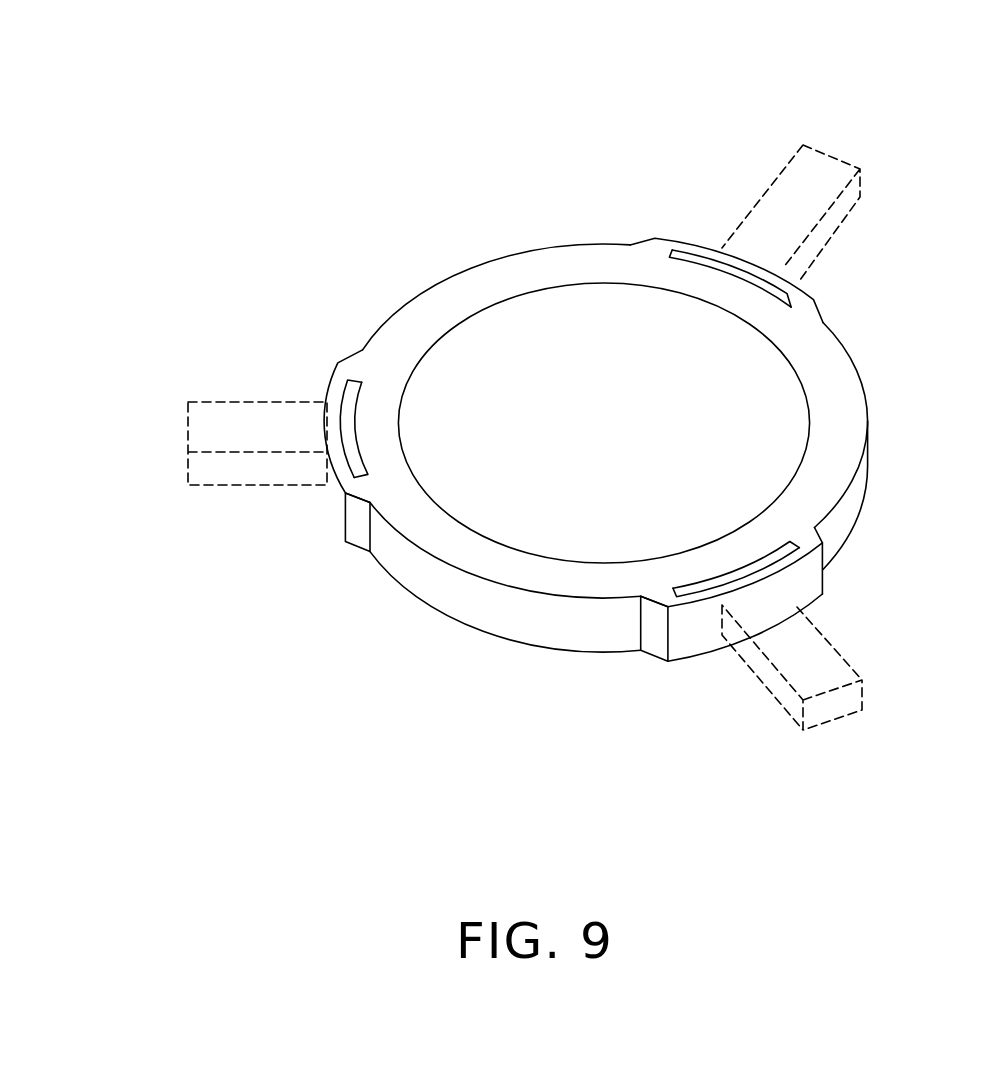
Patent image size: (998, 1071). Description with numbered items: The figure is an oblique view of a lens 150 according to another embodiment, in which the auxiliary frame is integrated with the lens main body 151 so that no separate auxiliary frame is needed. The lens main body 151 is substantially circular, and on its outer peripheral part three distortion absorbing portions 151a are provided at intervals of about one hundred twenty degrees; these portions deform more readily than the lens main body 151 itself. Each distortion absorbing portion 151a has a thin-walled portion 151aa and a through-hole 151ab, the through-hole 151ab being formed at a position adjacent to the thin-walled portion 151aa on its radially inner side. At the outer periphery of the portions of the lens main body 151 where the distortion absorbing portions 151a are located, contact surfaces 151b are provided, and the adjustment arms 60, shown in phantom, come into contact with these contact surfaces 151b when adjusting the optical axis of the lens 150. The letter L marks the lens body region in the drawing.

The lens 150 is at (537, 416).
The lens main body 151 is at (648, 409).
The distortion absorbing portion 151a is at (458, 77).
The contact surface 151b is at (707, 247).
The thin-walled portion 151aa is at (763, 275).
The through-hole 151ab is at (800, 296).
The adjustment arm 60 is at (815, 177).
The lens L is at (663, 403).